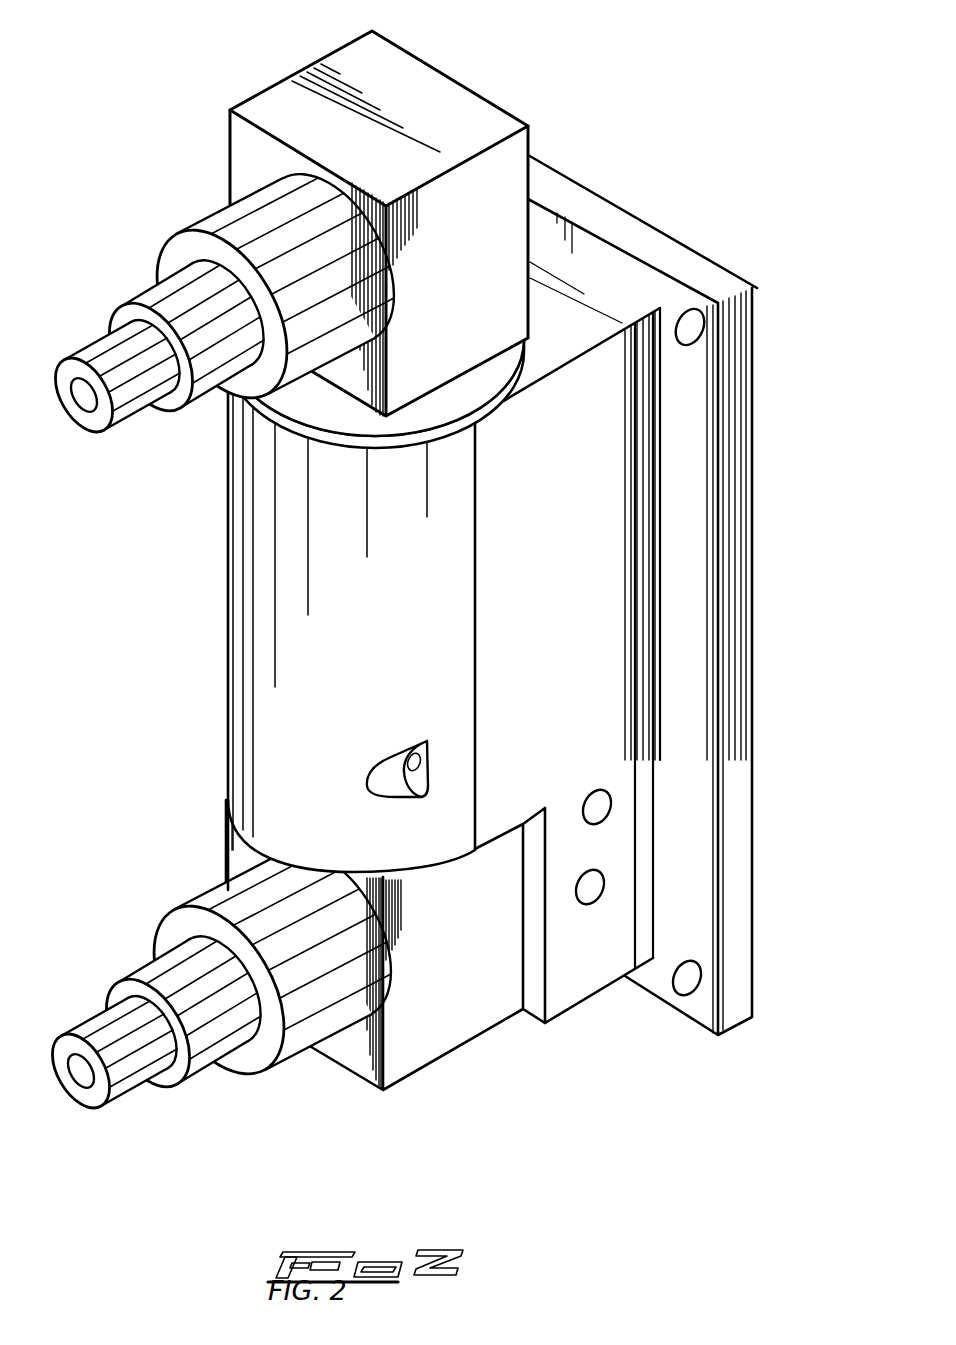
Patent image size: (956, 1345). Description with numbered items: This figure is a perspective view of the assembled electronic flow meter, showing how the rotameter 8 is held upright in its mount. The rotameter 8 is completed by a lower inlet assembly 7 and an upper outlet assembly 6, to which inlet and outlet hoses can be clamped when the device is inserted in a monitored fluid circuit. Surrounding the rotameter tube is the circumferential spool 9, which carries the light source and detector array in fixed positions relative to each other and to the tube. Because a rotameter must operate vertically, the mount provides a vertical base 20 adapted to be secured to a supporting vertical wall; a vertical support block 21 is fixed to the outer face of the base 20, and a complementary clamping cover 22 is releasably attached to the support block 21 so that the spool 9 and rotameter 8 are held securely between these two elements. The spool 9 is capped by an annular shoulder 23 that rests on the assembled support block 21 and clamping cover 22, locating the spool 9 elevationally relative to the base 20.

The upper outlet assembly 6 is at (238, 160).
The lower inlet assembly 7 is at (338, 1052).
The rotameter 8 is at (442, 58).
The spool 9 is at (527, 357).
The base 20 is at (760, 527).
The support block 21 is at (580, 563).
The clamping cover 22 is at (405, 675).
The annular shoulder 23 is at (487, 404).